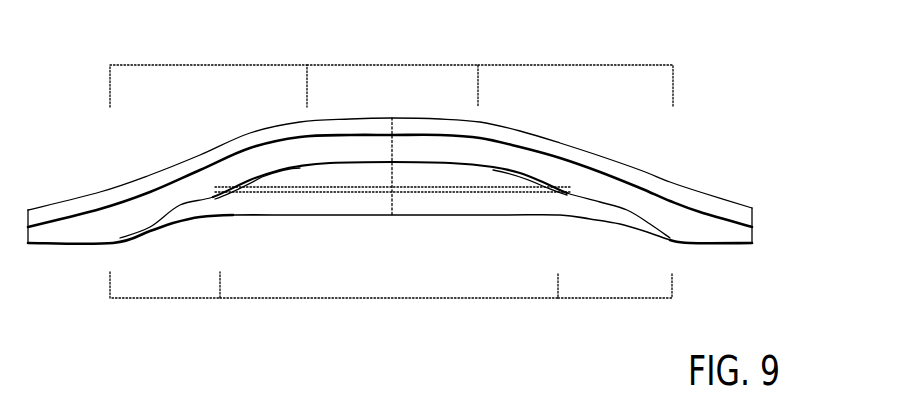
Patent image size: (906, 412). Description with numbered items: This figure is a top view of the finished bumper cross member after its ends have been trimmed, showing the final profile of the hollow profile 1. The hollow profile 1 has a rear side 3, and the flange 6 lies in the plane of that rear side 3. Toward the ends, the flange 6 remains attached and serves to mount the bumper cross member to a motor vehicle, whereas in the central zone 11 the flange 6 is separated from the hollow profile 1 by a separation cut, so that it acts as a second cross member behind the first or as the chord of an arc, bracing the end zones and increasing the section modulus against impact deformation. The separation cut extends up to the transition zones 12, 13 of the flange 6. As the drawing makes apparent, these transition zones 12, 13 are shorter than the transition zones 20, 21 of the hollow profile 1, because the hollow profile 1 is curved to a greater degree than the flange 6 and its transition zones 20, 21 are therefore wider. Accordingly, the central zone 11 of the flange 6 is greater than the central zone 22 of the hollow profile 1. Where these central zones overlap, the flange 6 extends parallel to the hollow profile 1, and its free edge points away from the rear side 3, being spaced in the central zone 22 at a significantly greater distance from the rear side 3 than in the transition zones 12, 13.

The hollow profile 1 is at (672, 181).
The rear side 3 is at (360, 167).
The upper flange 6 is at (433, 207).
The central zone 11 is at (389, 309).
The transition zone 12 is at (615, 309).
The transition zone 13 is at (165, 309).
The transition zone 20 is at (575, 64).
The transition zone 21 is at (208, 64).
The central zone 22 is at (392, 64).